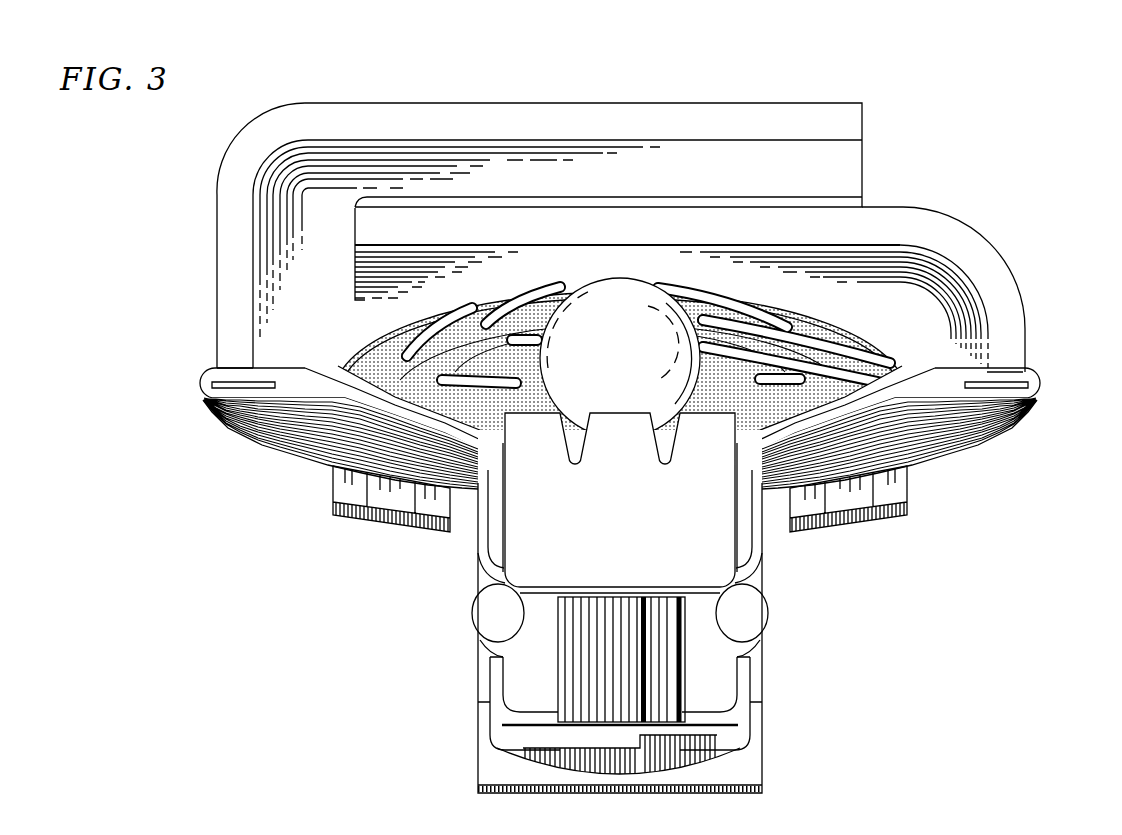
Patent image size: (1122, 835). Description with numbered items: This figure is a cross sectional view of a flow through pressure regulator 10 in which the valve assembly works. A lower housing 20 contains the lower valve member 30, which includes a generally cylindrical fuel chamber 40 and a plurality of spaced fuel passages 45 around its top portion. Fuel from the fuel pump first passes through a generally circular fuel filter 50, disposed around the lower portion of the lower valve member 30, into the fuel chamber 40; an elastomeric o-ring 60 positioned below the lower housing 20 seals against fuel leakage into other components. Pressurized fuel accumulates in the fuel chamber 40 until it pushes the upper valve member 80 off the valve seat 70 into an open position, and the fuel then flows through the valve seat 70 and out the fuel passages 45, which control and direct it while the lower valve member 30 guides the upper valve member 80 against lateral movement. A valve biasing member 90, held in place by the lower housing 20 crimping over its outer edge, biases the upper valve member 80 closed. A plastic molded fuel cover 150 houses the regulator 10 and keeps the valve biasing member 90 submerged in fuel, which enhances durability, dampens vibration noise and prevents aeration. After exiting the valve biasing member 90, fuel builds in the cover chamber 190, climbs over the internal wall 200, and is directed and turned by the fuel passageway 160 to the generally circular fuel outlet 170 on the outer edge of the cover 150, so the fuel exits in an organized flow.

The flow through pressure regulator 10 is at (1066, 194).
The lower housing 20 is at (960, 440).
The lower valve member 30 is at (715, 683).
The fuel chamber 40 is at (590, 683).
The fuel passages 45 is at (563, 468).
The fuel filter 50 is at (500, 749).
The o-ring 60 is at (765, 612).
The valve seat 70 is at (552, 413).
The upper valve member 80 is at (578, 378).
The valve biasing member 90 is at (357, 350).
The fuel cover 150 is at (257, 145).
The fuel passageway 160 is at (822, 176).
The fuel outlet 170 is at (862, 150).
The cover chamber 190 is at (883, 306).
The internal wall 200 is at (355, 223).